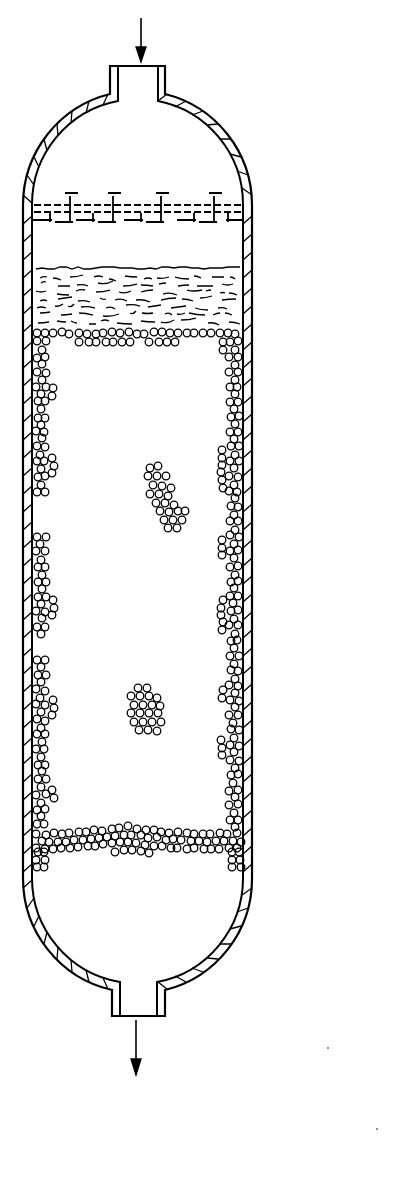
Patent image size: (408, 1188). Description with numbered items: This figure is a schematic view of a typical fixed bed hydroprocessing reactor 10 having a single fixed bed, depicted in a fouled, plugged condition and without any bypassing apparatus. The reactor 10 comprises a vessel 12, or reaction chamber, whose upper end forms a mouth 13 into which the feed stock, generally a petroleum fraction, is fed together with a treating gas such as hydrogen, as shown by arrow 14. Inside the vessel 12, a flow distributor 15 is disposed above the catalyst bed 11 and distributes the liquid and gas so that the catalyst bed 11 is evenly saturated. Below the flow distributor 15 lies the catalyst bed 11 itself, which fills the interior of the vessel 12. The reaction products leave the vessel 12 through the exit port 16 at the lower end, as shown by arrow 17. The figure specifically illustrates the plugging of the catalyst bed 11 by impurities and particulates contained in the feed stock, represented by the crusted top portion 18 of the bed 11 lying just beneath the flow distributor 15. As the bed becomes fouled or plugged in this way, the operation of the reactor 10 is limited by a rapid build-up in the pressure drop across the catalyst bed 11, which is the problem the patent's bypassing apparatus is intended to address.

The reactor 10 is at (236, 131).
The catalyst bed 11 is at (141, 574).
The vessel 12 is at (253, 594).
The mouth 13 is at (134, 80).
The arrow 14 is at (141, 27).
The flow distributor 15 is at (218, 212).
The exit port 16 is at (133, 1001).
The arrow 17 is at (136, 1033).
The crusted top portion 18 is at (220, 291).